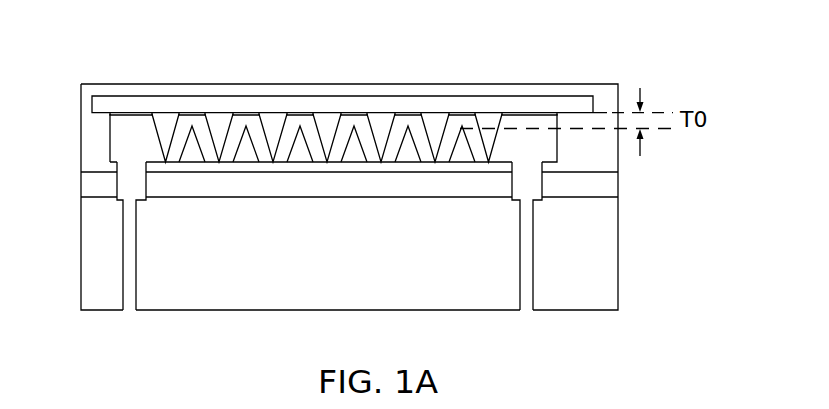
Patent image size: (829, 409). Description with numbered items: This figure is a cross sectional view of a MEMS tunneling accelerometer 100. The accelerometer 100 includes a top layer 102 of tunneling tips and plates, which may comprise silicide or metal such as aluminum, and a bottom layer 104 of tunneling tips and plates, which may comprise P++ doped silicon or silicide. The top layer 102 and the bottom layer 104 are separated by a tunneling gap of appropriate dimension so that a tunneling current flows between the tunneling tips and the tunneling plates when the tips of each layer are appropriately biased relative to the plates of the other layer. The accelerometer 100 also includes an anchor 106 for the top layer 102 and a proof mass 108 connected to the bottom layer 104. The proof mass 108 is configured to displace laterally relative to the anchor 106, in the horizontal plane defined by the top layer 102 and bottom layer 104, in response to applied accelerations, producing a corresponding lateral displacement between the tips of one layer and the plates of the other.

The MEMS tunneling accelerometer 100 is at (582, 53).
The top layer of tunneling tips and plates 102 is at (128, 114).
The bottom layer of tunneling tips and plates 104 is at (157, 162).
The anchor 106 is at (600, 171).
The proof mass 108 is at (490, 310).